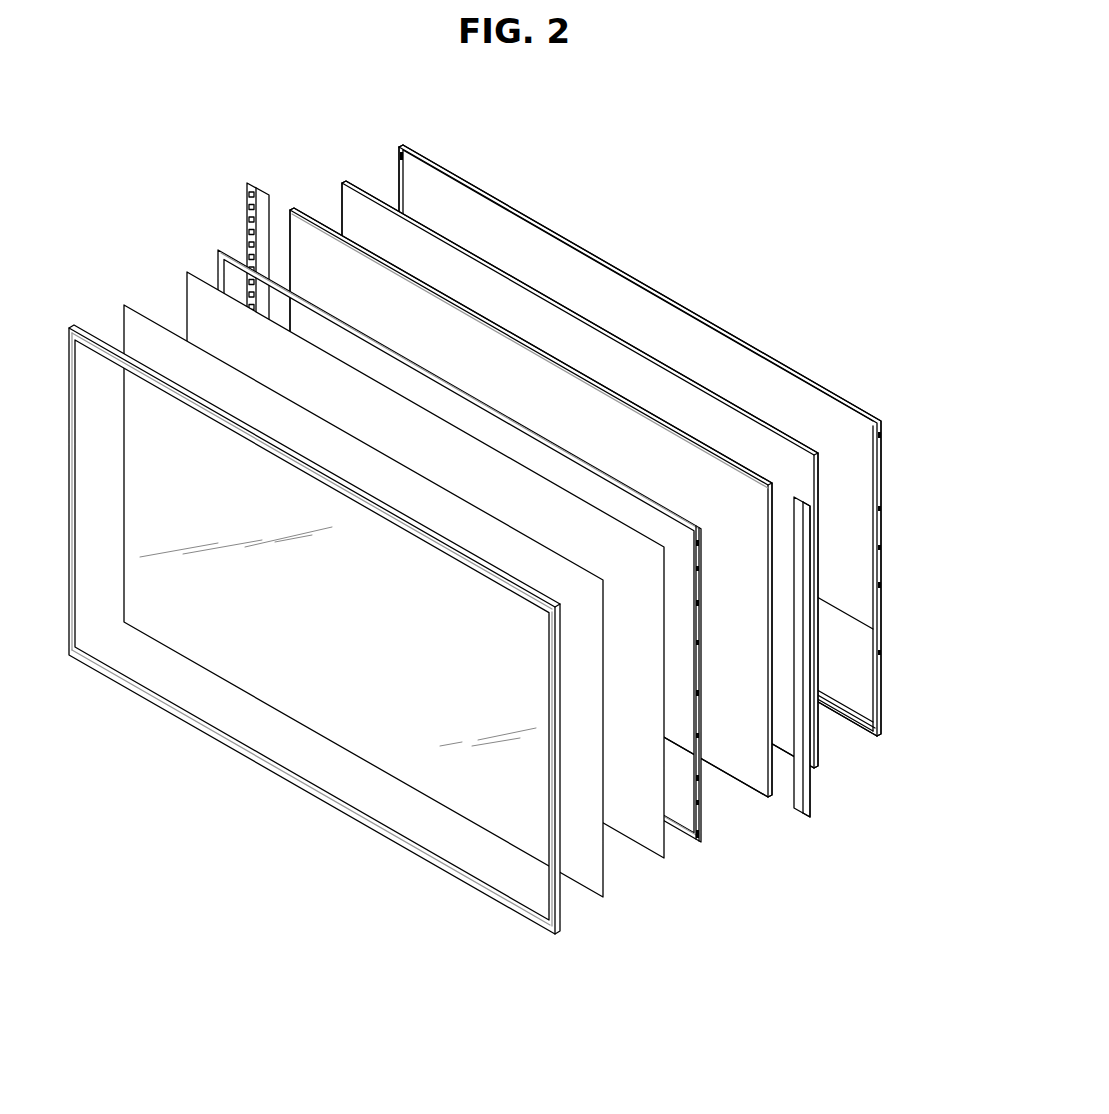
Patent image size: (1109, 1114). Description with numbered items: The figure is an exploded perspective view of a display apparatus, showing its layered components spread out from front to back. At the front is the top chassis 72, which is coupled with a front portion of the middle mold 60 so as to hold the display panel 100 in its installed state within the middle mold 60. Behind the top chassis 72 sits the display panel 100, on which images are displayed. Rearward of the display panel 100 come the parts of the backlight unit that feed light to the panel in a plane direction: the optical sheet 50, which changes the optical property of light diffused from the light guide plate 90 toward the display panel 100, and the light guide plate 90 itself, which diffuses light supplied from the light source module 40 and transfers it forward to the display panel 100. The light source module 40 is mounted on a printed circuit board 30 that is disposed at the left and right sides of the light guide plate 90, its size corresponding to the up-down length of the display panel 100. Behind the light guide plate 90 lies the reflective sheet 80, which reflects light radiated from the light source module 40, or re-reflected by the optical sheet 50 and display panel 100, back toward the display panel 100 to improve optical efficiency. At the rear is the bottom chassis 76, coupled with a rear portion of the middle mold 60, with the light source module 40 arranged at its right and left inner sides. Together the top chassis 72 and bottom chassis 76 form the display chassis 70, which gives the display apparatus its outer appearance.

The display chassis 70 is at (528, 580).
The top chassis 72 is at (547, 936).
The bottom chassis 76 is at (884, 674).
The reflective sheet 80 is at (777, 448).
The printed circuit board 30 is at (796, 808).
The light source module 40 is at (808, 802).
The light guide plate 90 is at (753, 778).
The middle mold 60 is at (703, 840).
The optical sheet 50 is at (667, 862).
The display panel 100 is at (606, 900).